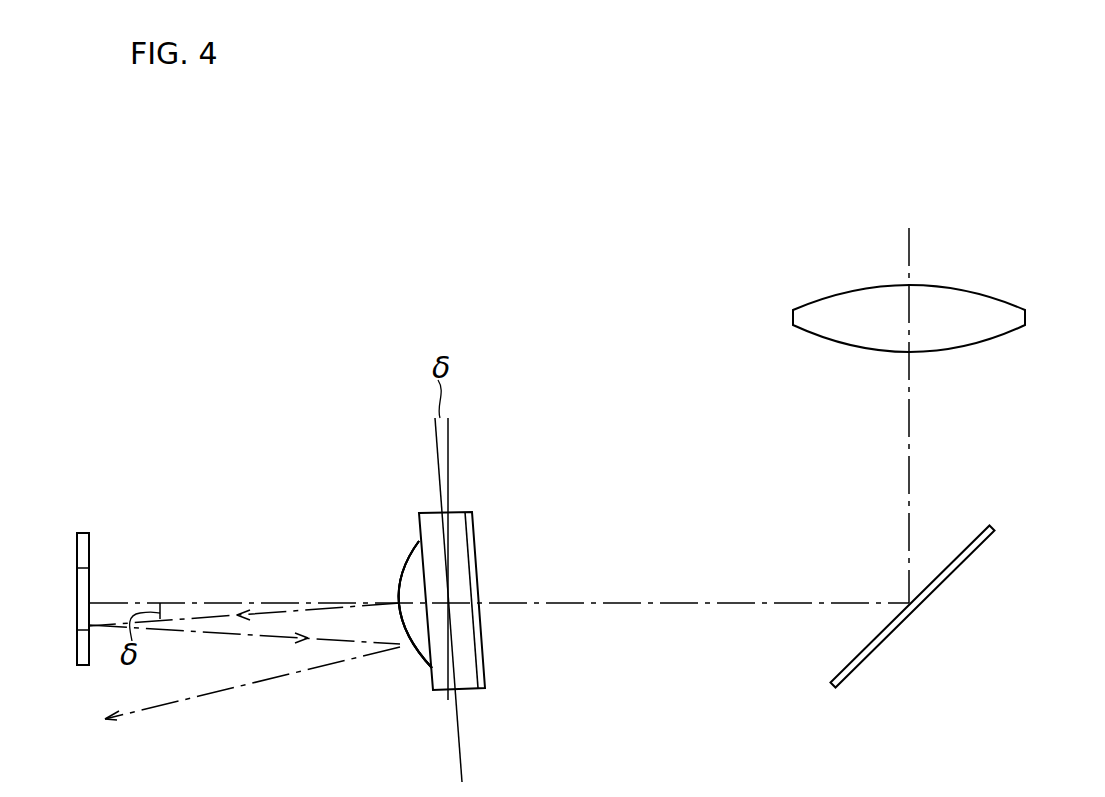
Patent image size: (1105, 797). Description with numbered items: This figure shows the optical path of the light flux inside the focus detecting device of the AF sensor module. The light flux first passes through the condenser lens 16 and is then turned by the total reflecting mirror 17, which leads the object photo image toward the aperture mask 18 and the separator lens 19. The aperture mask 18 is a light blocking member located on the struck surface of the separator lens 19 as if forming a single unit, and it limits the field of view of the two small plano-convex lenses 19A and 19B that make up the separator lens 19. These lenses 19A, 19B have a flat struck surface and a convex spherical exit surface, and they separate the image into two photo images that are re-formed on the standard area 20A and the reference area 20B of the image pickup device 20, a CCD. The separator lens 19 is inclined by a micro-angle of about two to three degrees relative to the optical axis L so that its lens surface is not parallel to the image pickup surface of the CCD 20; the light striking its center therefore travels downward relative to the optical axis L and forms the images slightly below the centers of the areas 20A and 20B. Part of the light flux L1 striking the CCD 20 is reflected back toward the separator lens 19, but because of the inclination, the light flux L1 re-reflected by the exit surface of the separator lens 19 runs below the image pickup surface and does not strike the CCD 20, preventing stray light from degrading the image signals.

The condenser lens 16 is at (987, 310).
The total reflecting mirror 17 is at (957, 573).
The aperture mask 18 is at (475, 529).
The separator lens 19 is at (422, 528).
The plano-convex lens 19A is at (415, 658).
The plano-convex lens 19B is at (415, 604).
The image pickup device 20 is at (86, 532).
The standard area 20A is at (89, 585).
The reference area 20B is at (83, 599).
The optical axis L is at (343, 600).
The reflected light flux L1 is at (252, 637).